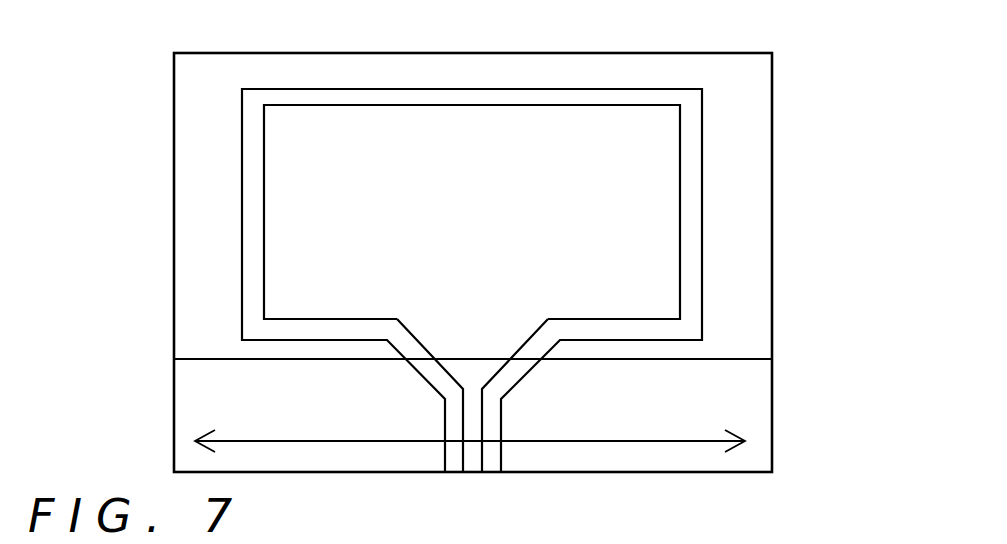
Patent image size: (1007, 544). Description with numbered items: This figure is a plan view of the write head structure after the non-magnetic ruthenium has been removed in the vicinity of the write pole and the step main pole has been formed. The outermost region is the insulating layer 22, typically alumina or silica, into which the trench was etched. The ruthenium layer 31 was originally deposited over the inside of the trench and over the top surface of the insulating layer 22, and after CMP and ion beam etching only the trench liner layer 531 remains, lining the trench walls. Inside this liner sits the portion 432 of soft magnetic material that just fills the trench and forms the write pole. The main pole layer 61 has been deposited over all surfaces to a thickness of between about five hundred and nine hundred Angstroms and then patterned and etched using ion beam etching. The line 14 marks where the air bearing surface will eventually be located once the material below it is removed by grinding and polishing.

The line 14 is at (693, 443).
The insulating layer 22 is at (735, 389).
The layer of ruthenium 31 is at (733, 173).
The main pole layer 61 is at (650, 120).
The portion 432 is at (474, 457).
The trench liner layer 531 is at (454, 425).